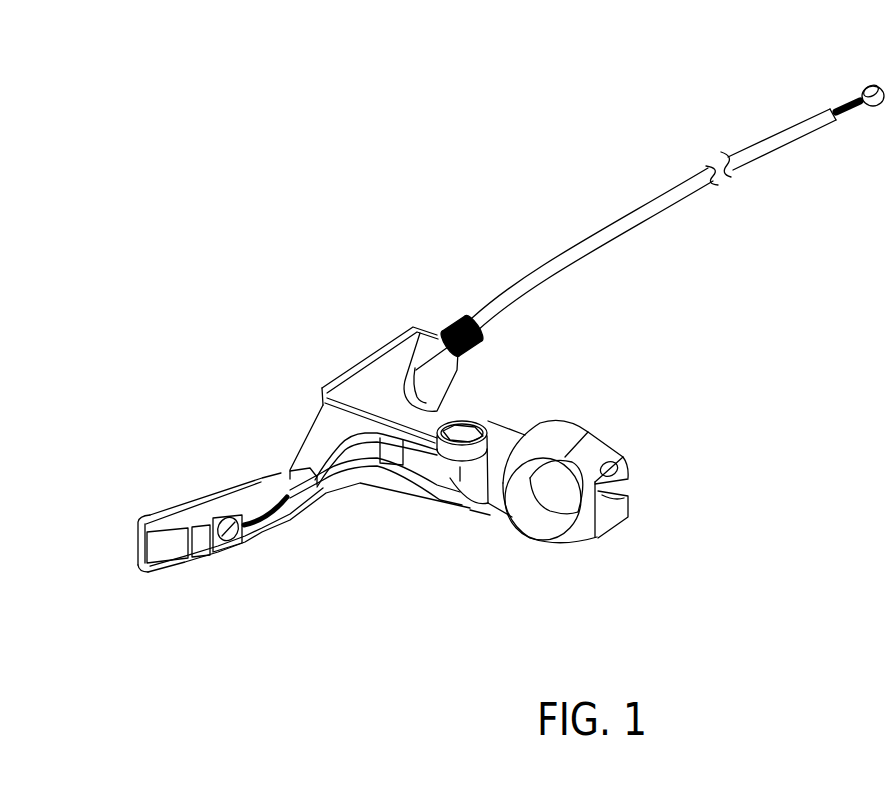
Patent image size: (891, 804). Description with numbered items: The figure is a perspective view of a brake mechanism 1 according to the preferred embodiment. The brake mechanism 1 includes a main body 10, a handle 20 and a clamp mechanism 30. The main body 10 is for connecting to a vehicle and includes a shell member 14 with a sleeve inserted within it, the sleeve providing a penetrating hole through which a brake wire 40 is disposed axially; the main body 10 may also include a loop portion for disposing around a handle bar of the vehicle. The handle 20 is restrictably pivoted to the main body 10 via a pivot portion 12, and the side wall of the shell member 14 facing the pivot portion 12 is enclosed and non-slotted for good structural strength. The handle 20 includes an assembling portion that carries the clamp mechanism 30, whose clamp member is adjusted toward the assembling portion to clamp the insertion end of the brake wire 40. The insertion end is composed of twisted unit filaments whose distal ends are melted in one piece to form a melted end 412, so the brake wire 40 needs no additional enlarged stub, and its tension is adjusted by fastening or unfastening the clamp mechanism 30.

The brake mechanism 1 is at (215, 250).
The main body 10 is at (611, 386).
The pivot portion 12 is at (445, 468).
The shell member 14 is at (377, 370).
The handle 20 is at (200, 466).
The clamp mechanism 30 is at (262, 574).
The brake wire 40 is at (673, 197).
The melted end 412 is at (204, 553).